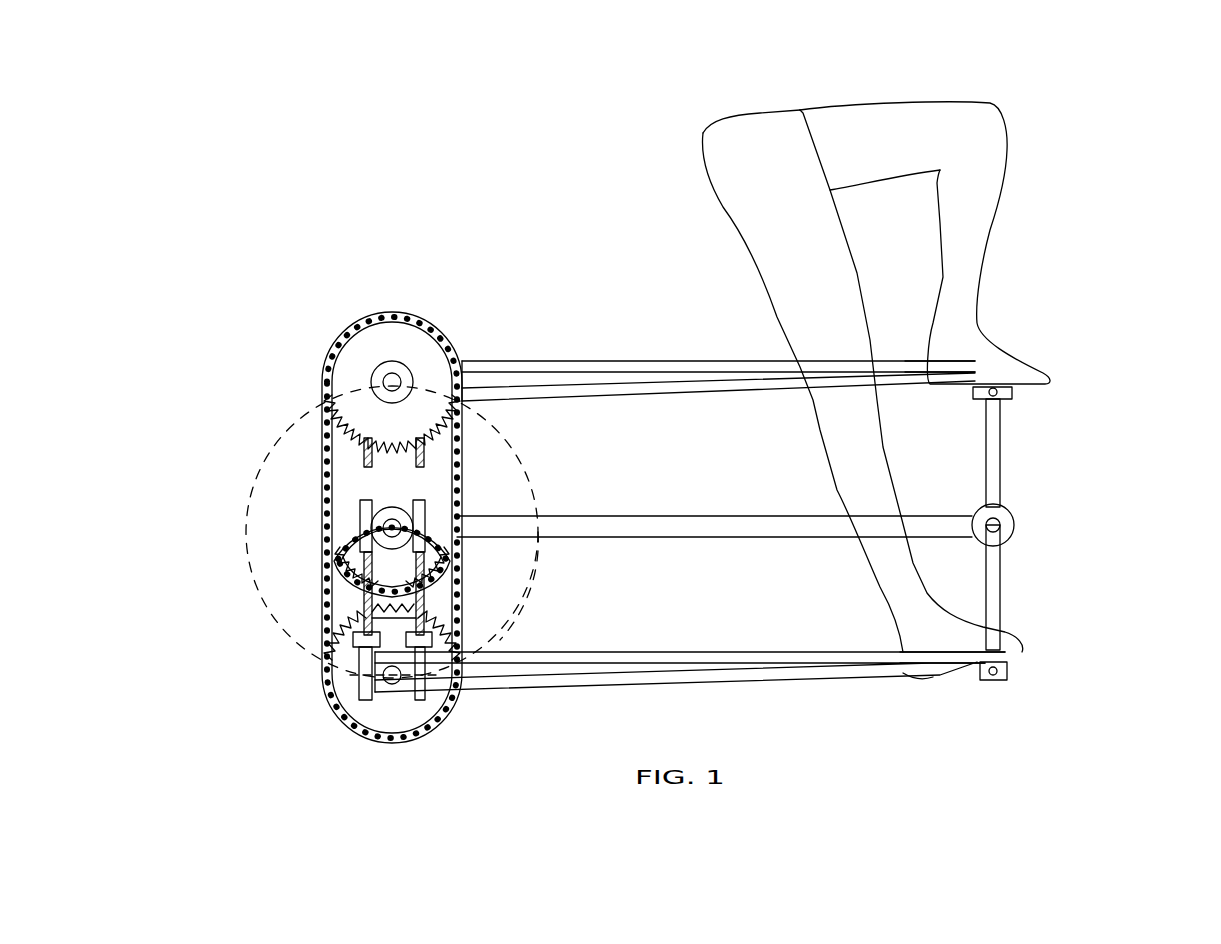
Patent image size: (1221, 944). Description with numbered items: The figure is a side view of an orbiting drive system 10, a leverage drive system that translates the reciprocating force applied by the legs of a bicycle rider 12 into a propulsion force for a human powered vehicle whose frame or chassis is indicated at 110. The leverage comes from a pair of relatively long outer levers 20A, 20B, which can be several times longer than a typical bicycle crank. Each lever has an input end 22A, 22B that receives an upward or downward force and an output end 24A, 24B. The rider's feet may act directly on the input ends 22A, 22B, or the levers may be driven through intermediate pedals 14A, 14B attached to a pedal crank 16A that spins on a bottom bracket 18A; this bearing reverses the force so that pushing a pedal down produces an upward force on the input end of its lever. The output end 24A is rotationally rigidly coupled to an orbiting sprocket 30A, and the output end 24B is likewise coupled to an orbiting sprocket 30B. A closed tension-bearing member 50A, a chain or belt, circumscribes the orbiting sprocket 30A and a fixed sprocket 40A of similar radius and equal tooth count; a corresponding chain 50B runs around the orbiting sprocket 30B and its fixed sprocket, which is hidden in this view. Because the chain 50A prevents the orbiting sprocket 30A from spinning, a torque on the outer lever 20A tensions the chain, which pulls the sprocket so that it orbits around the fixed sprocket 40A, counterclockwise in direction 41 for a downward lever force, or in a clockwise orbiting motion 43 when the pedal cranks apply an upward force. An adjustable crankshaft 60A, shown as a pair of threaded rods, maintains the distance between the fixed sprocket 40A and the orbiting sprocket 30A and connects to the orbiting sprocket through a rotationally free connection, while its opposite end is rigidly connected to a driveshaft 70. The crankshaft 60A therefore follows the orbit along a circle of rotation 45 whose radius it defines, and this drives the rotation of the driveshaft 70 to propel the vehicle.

The orbiting drive system 10 is at (280, 295).
The bicycle rider 12 is at (1010, 137).
The intermediate pedal 14A is at (1010, 681).
The intermediate pedal 14B is at (1013, 395).
The pedal crank 16A is at (1003, 467).
The bottom bracket 18A is at (972, 527).
The outer lever 20A is at (737, 690).
The outer lever 20B is at (683, 372).
The input end 22A is at (937, 665).
The input end 22B is at (913, 367).
The output end 24A is at (458, 690).
The output end 24B is at (483, 367).
The orbiting sprocket 30A is at (350, 682).
The orbiting sprocket 30B is at (323, 397).
The fixed sprocket 40A is at (345, 543).
The counterclockwise direction 41 is at (297, 205).
The clockwise orbiting motion 43 is at (500, 280).
The circle of rotation 45 is at (540, 546).
The closed tension-bearing member 50A is at (330, 603).
The chain 50B is at (323, 467).
The adjustable crankshaft 60A is at (430, 604).
The driveshaft 70 is at (463, 485).
The frame 110 is at (680, 530).